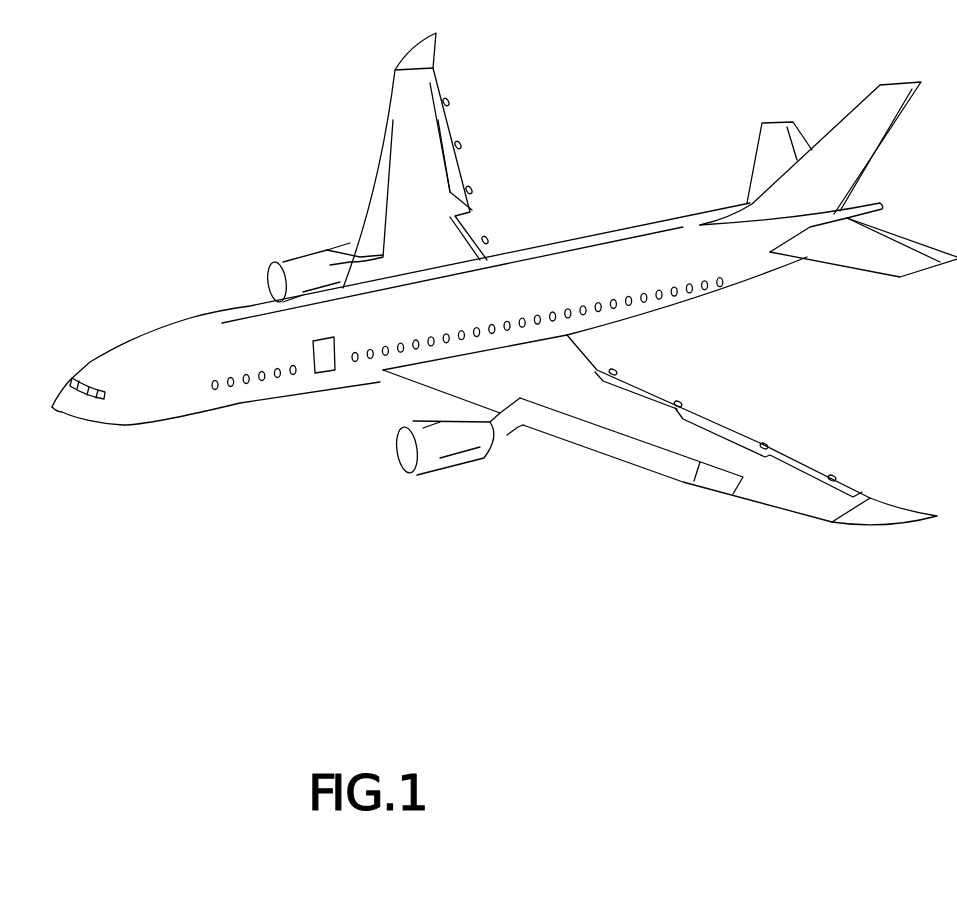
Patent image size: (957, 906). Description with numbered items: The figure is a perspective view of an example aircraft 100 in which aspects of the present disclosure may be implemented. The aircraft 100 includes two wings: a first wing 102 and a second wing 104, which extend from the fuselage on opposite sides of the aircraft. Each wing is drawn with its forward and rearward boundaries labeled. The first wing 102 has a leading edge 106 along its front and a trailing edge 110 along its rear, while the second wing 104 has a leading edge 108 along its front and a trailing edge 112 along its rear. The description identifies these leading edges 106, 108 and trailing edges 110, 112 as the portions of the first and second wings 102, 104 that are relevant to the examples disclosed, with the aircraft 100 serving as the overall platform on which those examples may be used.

The aircraft 100 is at (504, 291).
The first wing 102 is at (710, 464).
The second wing 104 is at (403, 106).
The leading edge 106 is at (638, 452).
The leading edge 108 is at (367, 233).
The trailing edge 110 is at (722, 420).
The trailing edge 112 is at (462, 168).